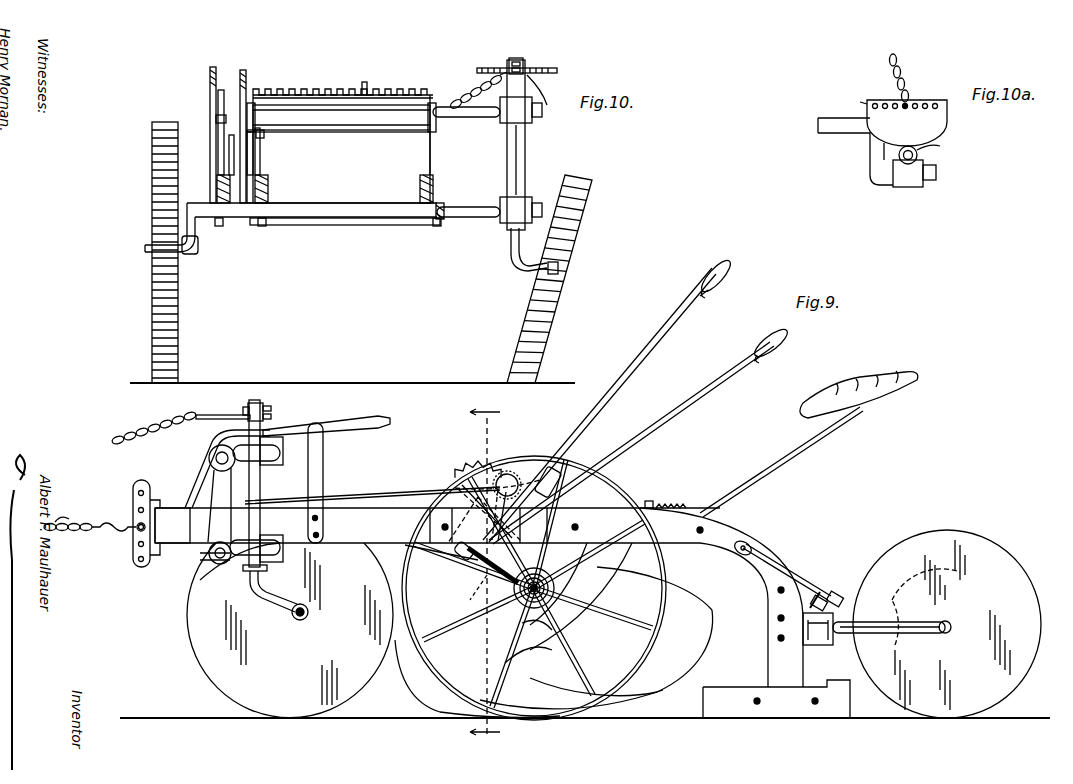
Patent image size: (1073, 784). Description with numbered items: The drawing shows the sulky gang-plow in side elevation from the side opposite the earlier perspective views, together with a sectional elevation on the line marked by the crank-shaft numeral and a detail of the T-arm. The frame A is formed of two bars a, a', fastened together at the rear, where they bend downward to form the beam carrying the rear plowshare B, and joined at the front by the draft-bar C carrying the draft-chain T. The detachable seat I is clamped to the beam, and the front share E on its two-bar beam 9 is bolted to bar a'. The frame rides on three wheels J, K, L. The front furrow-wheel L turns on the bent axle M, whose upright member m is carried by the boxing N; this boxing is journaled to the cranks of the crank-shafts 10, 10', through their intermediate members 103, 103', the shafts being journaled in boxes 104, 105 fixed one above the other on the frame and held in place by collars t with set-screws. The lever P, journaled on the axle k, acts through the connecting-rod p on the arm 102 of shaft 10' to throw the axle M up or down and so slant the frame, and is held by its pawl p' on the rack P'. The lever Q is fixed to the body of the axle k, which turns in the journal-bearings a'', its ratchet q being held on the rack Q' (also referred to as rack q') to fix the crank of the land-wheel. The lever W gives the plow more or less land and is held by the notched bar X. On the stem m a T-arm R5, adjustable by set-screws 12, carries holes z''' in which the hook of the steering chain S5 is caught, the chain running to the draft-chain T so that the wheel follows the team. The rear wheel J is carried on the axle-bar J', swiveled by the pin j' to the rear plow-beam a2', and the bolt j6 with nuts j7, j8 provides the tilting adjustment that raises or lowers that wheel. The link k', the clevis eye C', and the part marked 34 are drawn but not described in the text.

In FIG. 9, the beam of the front share 9 is at (549, 588).
In FIG. 10, the crank-shaft 10 is at (466, 133).
In FIG. 10a, the crank-shaft 10 is at (844, 138).
In FIG. 9, the crank-shaft 10 is at (366, 573).
In FIG. 10, the crank-shaft 10' is at (468, 198).
In FIG. 9, the crank-shaft 10' is at (255, 536).
In FIG. 10, the set-screws 12 is at (547, 102).
In FIG. 10a, the set-screws 12 is at (908, 188).
In FIG. 9, the set-screws 12 is at (272, 416).
In FIG. 9, the link 34 is at (467, 598).
In FIG. 9, the arm of the crank-shaft 102 is at (220, 528).
In FIG. 10, the intermediate crank member 103 is at (512, 117).
In FIG. 10a, the intermediate crank member 103 is at (871, 171).
In FIG. 9, the intermediate crank member 103 is at (285, 452).
In FIG. 10, the intermediate crank member 103' is at (511, 222).
In FIG. 9, the intermediate crank member 103' is at (250, 564).
In FIG. 10, the box 104 is at (340, 120).
In FIG. 9, the box 104 is at (196, 480).
In FIG. 10, the box 105 is at (405, 226).
In FIG. 9, the box 105 is at (208, 556).
In FIG. 10, the frame A is at (428, 167).
In FIG. 9, the frame A is at (368, 545).
In FIG. 9, the rear plowshare B is at (745, 613).
In FIG. 9, the draft-bar C is at (169, 523).
In FIG. 9, the clevis eye C' is at (120, 545).
In FIG. 9, the front share E is at (554, 630).
In FIG. 9, the detachable seat I is at (796, 442).
In FIG. 9, the rear furrow-wheel J is at (947, 624).
In FIG. 9, the axle-bar of the hind furrow-wheel J' is at (892, 605).
In FIG. 10, the supporting-wheel K is at (355, 206).
In FIG. 9, the supporting-wheel K is at (520, 605).
In FIG. 10, the front furrow-wheel L is at (541, 312).
In FIG. 9, the front furrow-wheel L is at (290, 630).
In FIG. 10, the bent axle of the front furrow-wheel M is at (516, 270).
In FIG. 9, the bent axle of the front furrow-wheel M is at (287, 614).
In FIG. 10, the boxing N is at (526, 158).
In FIG. 9, the boxing N is at (260, 475).
In FIG. 10, the lever P is at (252, 125).
In FIG. 9, the lever P is at (640, 434).
In FIG. 10, the rack P' is at (278, 158).
In FIG. 10, the lever Q is at (201, 135).
In FIG. 9, the lever Q is at (609, 399).
In FIG. 9, the rack Q' is at (552, 462).
In FIG. 10, the T-arm R5 is at (558, 70).
In FIG. 10a, the T-arm R5 is at (907, 123).
In FIG. 9, the T-arm R5 is at (245, 414).
In FIG. 10, the chain S5 is at (462, 94).
In FIG. 10a, the chain S5 is at (900, 100).
In FIG. 9, the chain S5 is at (146, 428).
In FIG. 9, the draft-chain T is at (55, 520).
In FIG. 10, the lever W is at (364, 82).
In FIG. 9, the lever W is at (345, 420).
In FIG. 10, the notched bar X is at (318, 88).
In FIG. 9, the notched bar X is at (324, 436).
In FIG. 10, the frame bar a is at (225, 189).
In FIG. 9, the frame bar a is at (437, 522).
In FIG. 10, the frame bar a' is at (439, 173).
In FIG. 10, the journal-bearings a'' is at (333, 236).
In FIG. 9, the rear plow-beam a2' is at (781, 564).
In FIG. 9, the pin j' is at (824, 580).
In FIG. 9, the bolt j6 is at (818, 592).
In FIG. 9, the nut j7 is at (840, 593).
In FIG. 9, the nut j8 is at (840, 612).
In FIG. 9, the axle k is at (441, 565).
In FIG. 10, the link k' is at (199, 247).
In FIG. 9, the link k' is at (485, 570).
In FIG. 10, the upright member of the front furrow-wheel axle m is at (517, 58).
In FIG. 10a, the upright member of the front furrow-wheel axle m is at (929, 150).
In FIG. 9, the upright member of the front furrow-wheel axle m is at (264, 402).
In FIG. 10, the connecting-rod p is at (234, 155).
In FIG. 9, the connecting-rod p is at (372, 481).
In FIG. 10, the pawl p' is at (271, 152).
In FIG. 9, the pawl p' is at (522, 465).
In FIG. 10, the ratchet q is at (224, 124).
In FIG. 10, the rack q' is at (208, 145).
In FIG. 9, the rack q' is at (484, 489).
In FIG. 10, the collars t is at (268, 118).
In FIG. 9, the collars t is at (190, 572).
In FIG. 10, the holes z''' is at (497, 60).
In FIG. 10a, the holes z''' is at (852, 99).